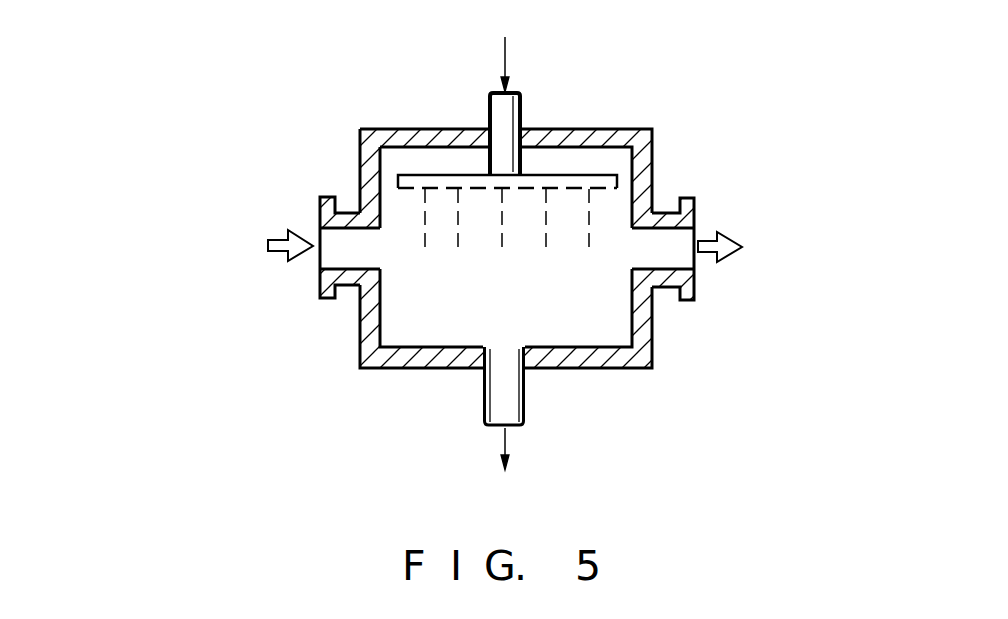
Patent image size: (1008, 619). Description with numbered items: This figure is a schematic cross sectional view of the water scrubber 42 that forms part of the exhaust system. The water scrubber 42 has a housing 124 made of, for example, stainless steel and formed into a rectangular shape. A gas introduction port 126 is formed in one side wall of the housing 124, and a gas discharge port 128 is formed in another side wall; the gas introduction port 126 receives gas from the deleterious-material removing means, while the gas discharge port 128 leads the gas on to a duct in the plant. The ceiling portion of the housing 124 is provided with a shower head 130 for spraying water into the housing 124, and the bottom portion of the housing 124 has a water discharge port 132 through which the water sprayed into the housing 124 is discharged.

The water scrubber 42 is at (681, 45).
The housing 124 is at (426, 361).
The gas introduction port 126 is at (336, 253).
The gas discharge port 128 is at (420, 128).
The shower head 130 is at (588, 168).
The water discharge port 132 is at (507, 382).